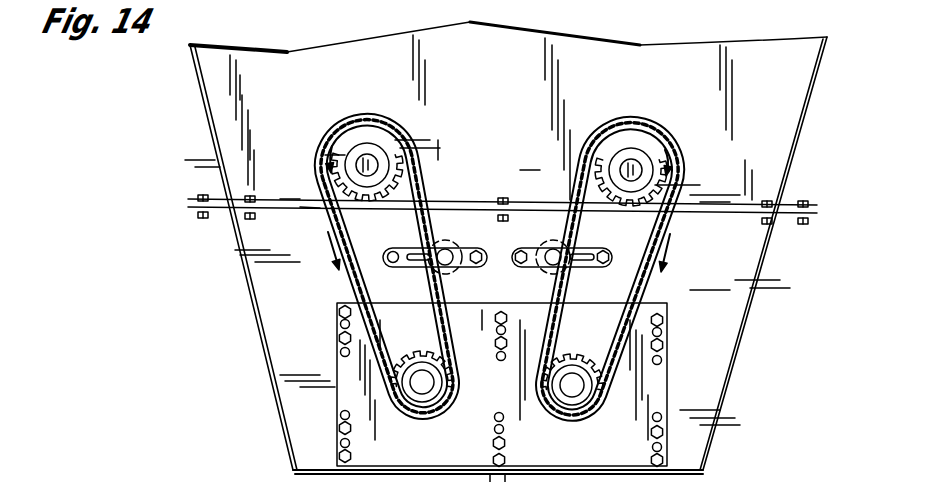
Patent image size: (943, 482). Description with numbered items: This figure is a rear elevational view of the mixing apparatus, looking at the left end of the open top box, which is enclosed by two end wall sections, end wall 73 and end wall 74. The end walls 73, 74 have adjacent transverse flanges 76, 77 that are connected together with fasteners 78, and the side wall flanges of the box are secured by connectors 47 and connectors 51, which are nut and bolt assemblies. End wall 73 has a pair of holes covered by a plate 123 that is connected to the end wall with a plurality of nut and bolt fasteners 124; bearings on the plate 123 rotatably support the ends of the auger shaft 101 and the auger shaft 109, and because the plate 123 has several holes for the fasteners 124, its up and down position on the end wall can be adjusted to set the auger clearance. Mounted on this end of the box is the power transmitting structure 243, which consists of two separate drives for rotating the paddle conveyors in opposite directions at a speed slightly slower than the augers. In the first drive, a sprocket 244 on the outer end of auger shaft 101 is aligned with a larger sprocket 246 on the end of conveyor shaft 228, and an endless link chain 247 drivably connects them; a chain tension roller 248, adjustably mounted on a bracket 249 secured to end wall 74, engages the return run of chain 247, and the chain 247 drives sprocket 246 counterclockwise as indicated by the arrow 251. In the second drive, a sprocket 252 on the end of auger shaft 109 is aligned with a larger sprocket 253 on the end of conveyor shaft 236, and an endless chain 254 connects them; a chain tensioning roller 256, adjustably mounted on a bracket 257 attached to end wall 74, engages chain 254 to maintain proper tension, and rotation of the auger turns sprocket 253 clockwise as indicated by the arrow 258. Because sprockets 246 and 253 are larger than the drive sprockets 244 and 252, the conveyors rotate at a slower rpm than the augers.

The end wall 73 is at (350, 58).
The end wall 74 is at (278, 335).
The power transmitting structure 243 is at (584, 76).
The fasteners 78 is at (507, 198).
The connectors 51 is at (201, 195).
The connectors 47 is at (808, 202).
The transverse flange 76 is at (285, 197).
The transverse flange 77 is at (306, 208).
The sprocket 246 is at (405, 182).
The longitudinal shaft 228 is at (378, 160).
The arrow 251 is at (322, 152).
The endless link chain 247 is at (350, 283).
The sprocket 253 is at (669, 229).
The longitudinal shaft 236 is at (644, 163).
The arrow 258 is at (680, 163).
The endless chain 254 is at (656, 272).
The bracket 249 is at (477, 268).
The chain tension roller 248 is at (452, 246).
The idler bracket 257 is at (522, 268).
The chain tensioning roller 256 is at (553, 246).
The plate 123 is at (658, 385).
The nut and bolt fasteners 124 is at (340, 456).
The sprocket 244 is at (412, 352).
The auger shaft 101 is at (428, 392).
The sprocket 252 is at (584, 352).
The auger shaft 109 is at (578, 395).